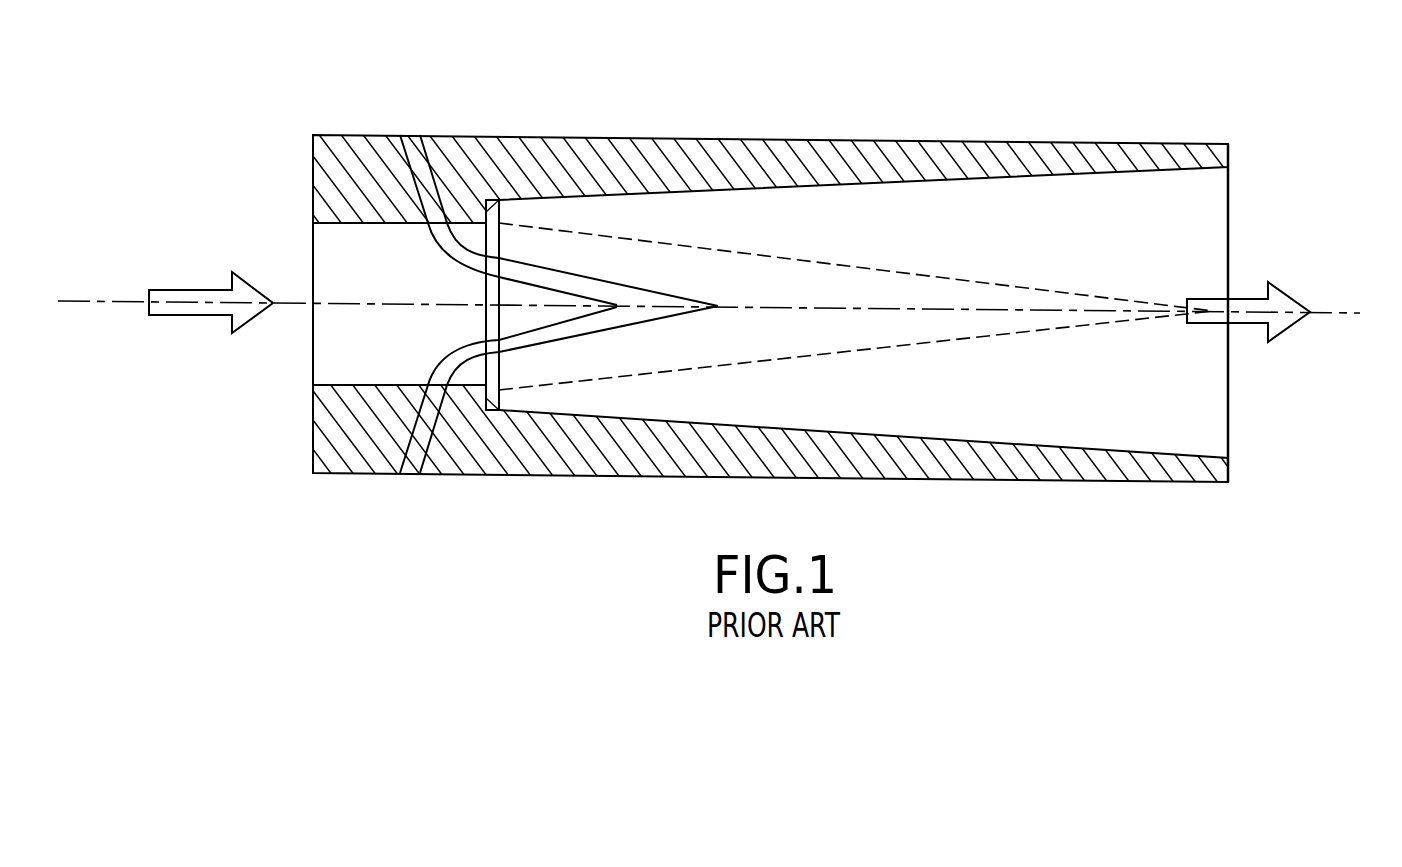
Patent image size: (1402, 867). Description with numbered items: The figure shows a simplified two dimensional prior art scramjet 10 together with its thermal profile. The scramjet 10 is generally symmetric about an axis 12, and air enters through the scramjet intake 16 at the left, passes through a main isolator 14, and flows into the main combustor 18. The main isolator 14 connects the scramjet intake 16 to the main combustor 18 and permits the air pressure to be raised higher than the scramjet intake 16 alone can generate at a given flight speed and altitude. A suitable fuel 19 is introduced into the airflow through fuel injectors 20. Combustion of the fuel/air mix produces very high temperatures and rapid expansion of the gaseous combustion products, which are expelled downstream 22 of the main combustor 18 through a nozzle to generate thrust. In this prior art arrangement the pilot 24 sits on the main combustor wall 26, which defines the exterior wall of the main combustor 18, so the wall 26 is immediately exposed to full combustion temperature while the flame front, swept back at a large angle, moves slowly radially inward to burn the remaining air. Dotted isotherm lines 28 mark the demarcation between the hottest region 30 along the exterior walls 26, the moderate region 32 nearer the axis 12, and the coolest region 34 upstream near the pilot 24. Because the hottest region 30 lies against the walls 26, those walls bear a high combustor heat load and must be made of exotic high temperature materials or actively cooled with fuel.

The scramjet 10 is at (500, 84).
The axis 12 is at (1335, 313).
The main isolator 14 is at (332, 348).
The scramjet intake 16 is at (190, 290).
The main combustor 18 is at (1013, 210).
The fuel 19 is at (538, 268).
The fuel injectors 20 is at (438, 437).
The downstream 22 is at (1242, 297).
The pilot 24 is at (503, 406).
The main combustor wall 26 is at (777, 428).
The dotted isotherm lines 28 is at (792, 257).
The hottest region 30 is at (1126, 260).
The moderate region 32 is at (738, 286).
The coolest region 34 is at (416, 282).